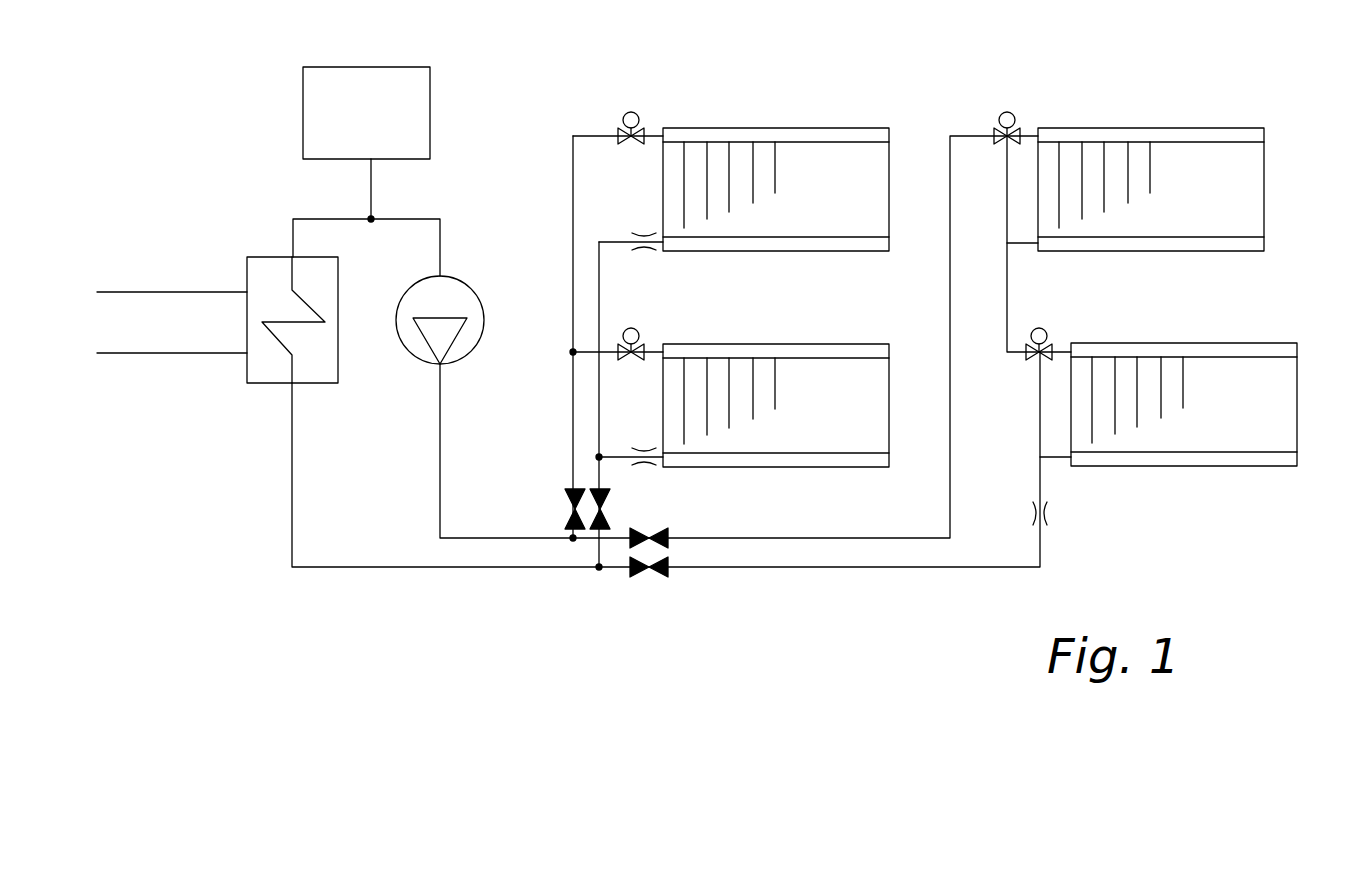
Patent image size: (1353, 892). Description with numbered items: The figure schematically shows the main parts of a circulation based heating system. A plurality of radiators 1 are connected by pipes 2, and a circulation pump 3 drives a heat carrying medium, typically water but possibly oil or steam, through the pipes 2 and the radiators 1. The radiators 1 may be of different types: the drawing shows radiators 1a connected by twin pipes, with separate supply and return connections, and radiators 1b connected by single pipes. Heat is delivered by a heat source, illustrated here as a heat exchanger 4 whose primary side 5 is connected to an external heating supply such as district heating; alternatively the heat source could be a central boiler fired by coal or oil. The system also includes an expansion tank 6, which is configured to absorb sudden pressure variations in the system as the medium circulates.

The radiators 1 is at (764, 157).
The radiators connected by twin pipes 1a is at (740, 380).
The radiators connected by single pipes 1b is at (1167, 383).
The pipes 2 is at (440, 510).
The circulation pump 3 is at (440, 277).
The heat exchanger 4 is at (262, 384).
The primary side 5 is at (202, 292).
The expansion tank 6 is at (430, 111).